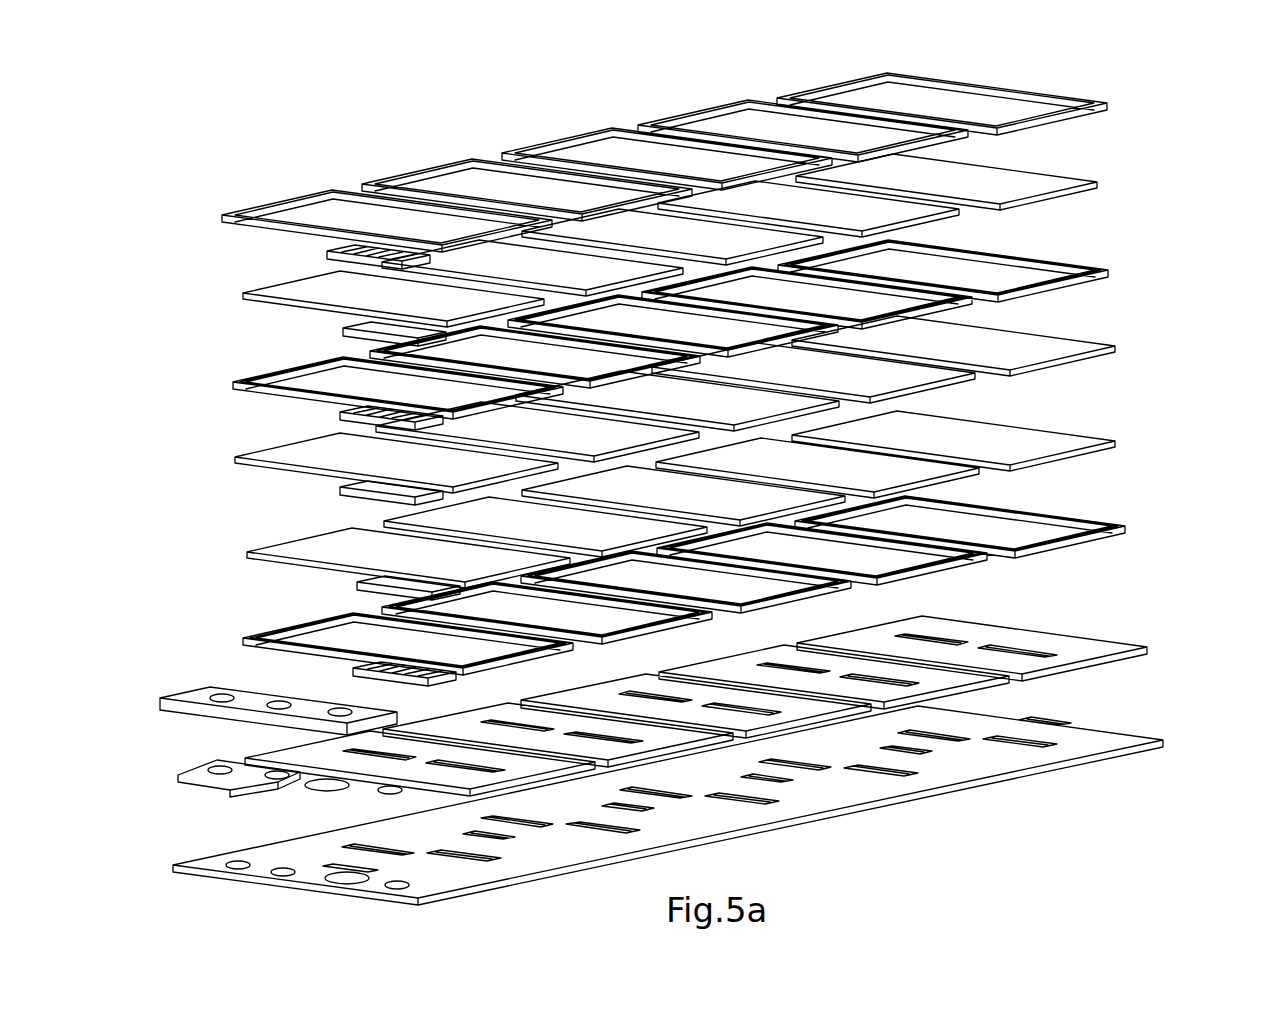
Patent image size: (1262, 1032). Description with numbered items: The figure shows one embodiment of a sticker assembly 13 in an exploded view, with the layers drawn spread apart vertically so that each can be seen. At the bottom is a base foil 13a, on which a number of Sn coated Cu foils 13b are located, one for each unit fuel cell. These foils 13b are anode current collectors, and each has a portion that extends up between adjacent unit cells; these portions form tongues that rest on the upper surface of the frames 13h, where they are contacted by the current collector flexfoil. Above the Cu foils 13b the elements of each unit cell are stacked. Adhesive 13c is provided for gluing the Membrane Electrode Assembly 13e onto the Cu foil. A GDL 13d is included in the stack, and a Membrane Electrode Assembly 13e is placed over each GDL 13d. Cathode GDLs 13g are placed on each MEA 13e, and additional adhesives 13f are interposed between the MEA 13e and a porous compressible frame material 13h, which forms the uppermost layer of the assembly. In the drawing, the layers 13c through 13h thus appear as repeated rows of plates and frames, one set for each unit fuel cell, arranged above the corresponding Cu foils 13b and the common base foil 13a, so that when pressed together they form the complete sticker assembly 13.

The sticker assembly 13 is at (312, 122).
The base foil 13a is at (1150, 745).
The Sn coated Cu foils 13b is at (1127, 645).
The adhesive 13c is at (1112, 526).
The GDL 13d is at (1100, 441).
The Membrane Electrode Assembly (MEA) 13e is at (1100, 347).
The additional adhesives 13f is at (1105, 270).
The cathode GDLs 13g is at (1077, 184).
The porous compressible frame material 13h is at (1105, 103).